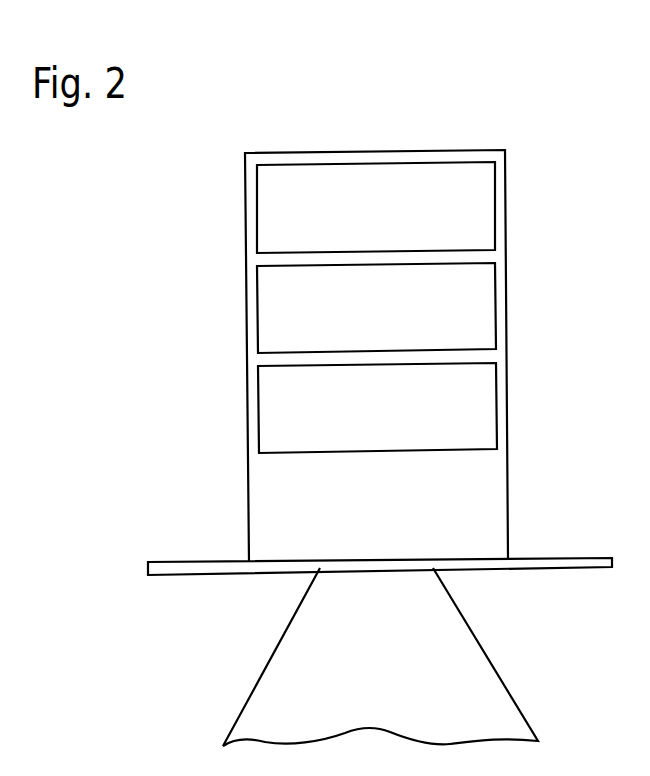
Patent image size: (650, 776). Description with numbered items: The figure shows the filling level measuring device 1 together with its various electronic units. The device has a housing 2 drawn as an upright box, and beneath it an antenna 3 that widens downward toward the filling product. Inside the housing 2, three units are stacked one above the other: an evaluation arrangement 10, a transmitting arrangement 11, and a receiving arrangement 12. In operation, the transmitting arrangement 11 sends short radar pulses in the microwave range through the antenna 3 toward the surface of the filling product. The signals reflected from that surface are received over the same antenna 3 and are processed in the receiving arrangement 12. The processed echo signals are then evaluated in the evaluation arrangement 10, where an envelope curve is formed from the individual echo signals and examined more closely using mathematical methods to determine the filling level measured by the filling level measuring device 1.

The filling level measuring device 1 is at (466, 112).
The housing 2 is at (508, 479).
The antenna 3 is at (500, 670).
The evaluation arrangement 10 is at (477, 212).
The transmitting arrangement 11 is at (477, 307).
The receiving arrangement 12 is at (477, 390).